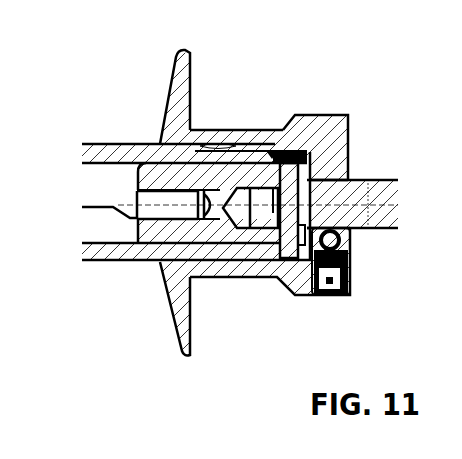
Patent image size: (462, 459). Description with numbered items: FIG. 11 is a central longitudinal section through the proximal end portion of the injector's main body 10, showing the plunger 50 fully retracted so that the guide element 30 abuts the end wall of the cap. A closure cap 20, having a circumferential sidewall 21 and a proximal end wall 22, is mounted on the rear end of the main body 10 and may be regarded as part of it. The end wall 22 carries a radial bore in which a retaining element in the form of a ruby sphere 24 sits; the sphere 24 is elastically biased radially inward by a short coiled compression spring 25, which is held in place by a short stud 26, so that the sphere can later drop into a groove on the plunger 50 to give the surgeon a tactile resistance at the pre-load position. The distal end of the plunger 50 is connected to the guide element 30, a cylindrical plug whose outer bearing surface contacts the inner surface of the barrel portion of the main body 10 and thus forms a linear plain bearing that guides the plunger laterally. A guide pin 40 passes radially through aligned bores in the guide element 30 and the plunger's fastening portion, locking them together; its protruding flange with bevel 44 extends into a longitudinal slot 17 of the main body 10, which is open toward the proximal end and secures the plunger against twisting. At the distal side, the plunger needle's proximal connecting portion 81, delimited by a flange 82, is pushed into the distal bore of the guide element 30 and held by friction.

The main body 10 is at (95, 152).
The longitudinal slot 17 is at (95, 253).
The closure cap 20 is at (310, 117).
The circumferential sidewall 21 is at (215, 137).
The proximal end wall 22 is at (337, 140).
The ruby sphere 24 is at (338, 243).
The coiled compression spring 25 is at (352, 268).
The stud 26 is at (337, 297).
The guide element 30 is at (158, 176).
The guide pin 40 is at (278, 150).
The bevel 44 is at (283, 262).
The plunger 50 is at (383, 187).
The proximal connecting portion 81 is at (170, 208).
The flange 82 is at (130, 221).